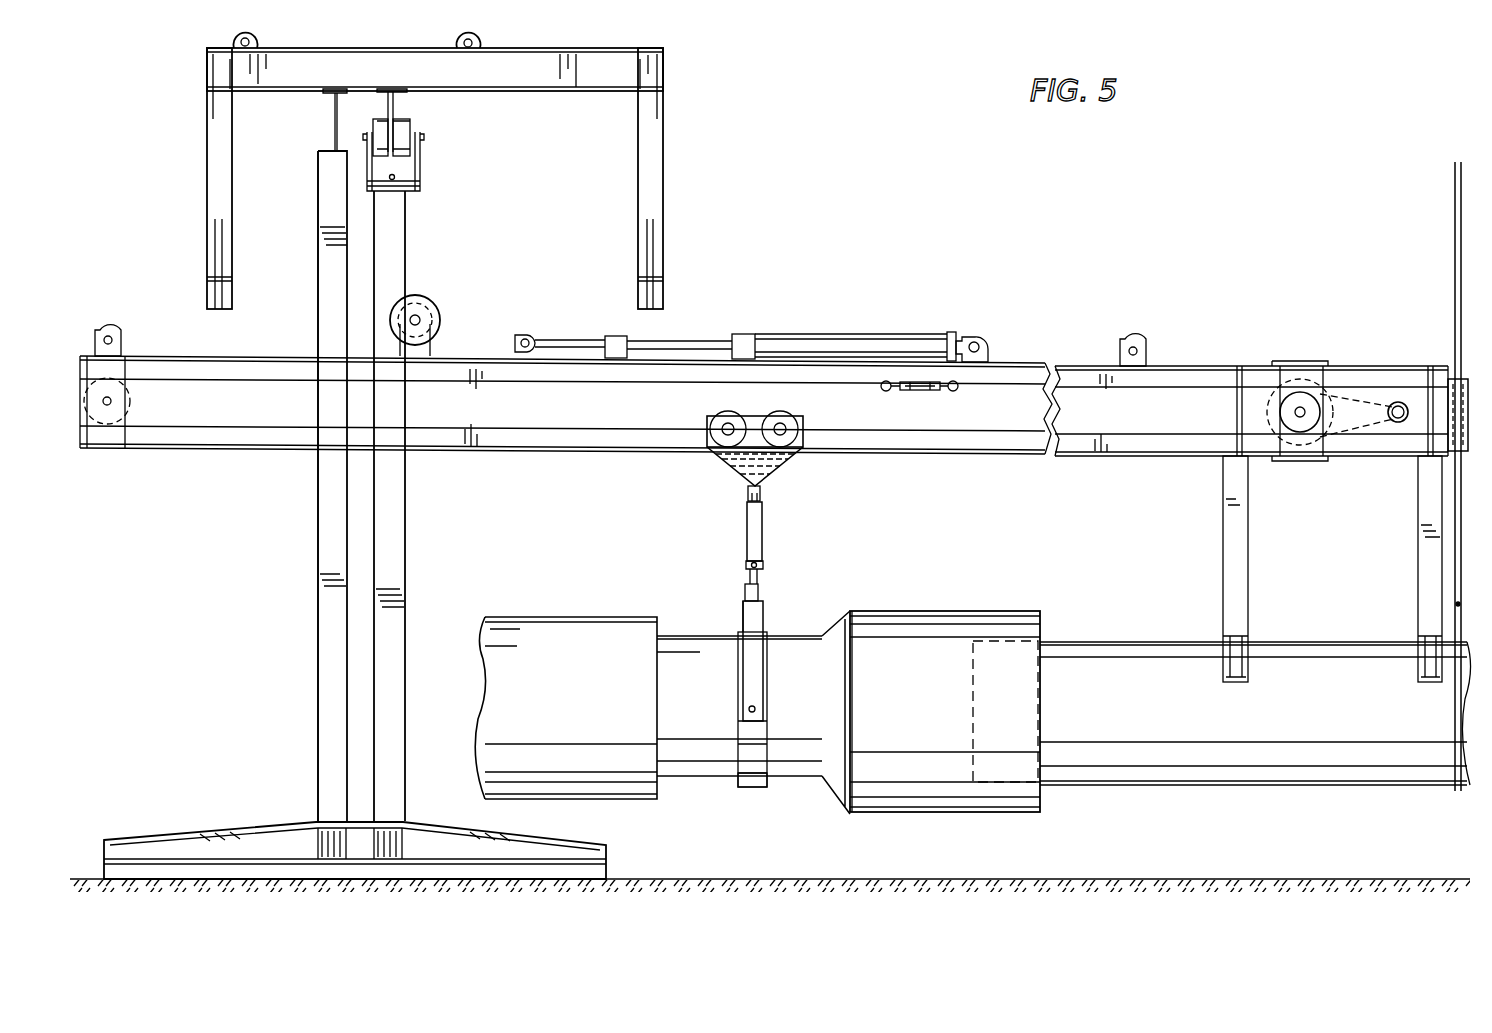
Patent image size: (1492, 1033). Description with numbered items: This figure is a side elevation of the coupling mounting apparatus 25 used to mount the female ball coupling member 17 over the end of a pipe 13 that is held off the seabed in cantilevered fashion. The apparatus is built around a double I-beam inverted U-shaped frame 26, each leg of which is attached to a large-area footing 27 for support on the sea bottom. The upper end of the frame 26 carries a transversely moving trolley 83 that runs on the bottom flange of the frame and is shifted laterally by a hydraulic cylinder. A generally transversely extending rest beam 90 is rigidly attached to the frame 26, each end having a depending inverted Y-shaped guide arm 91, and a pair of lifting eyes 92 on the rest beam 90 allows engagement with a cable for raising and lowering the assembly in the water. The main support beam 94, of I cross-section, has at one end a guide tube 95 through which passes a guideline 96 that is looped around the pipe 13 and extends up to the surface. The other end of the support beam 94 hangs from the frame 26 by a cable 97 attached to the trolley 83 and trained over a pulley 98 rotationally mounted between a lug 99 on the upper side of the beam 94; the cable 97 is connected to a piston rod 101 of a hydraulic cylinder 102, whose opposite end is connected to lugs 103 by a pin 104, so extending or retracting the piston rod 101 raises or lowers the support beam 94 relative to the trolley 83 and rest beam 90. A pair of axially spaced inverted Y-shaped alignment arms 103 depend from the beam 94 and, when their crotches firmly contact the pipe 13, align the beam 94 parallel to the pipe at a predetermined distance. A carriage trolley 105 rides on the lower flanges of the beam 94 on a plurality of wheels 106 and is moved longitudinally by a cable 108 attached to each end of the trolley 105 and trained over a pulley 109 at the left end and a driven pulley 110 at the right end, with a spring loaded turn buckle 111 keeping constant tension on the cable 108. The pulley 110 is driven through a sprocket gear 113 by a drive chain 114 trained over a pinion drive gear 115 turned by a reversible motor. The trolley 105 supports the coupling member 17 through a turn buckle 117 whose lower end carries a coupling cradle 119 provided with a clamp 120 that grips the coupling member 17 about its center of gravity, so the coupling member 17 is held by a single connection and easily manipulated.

The pipe 13 is at (1263, 767).
The female ball coupling member 17 is at (905, 797).
The coupling mounting apparatus 25 is at (306, 627).
The inverted U-shaped frame 26 is at (322, 540).
The footing 27 is at (584, 852).
The trolley 83 is at (420, 164).
The rest beam 90 is at (605, 82).
The guide arms 91 is at (210, 178).
The lifting eyes 92 is at (242, 52).
The main support beam 94 is at (1168, 377).
The guide tube 95 is at (1453, 457).
The guideline 96 is at (1460, 240).
The cable 97 is at (396, 240).
The pulley 98 is at (429, 298).
The lug 99 is at (418, 333).
The piston rod 101 is at (695, 340).
The hydraulic cylinder 102 is at (863, 340).
The lugs / alignment arms 103 is at (993, 352).
The pin 104 is at (973, 344).
The trolley 105 is at (777, 468).
The wheels 106 is at (722, 414).
The cable 108 is at (1015, 438).
The pulley 109 is at (132, 403).
The pulley 110 is at (1277, 417).
The spring loaded turn buckle 111 is at (921, 389).
The sprocket gear 113 is at (1330, 395).
The drive chain 114 is at (1368, 395).
The pinion drive gear 115 is at (1386, 425).
The turn buckle 117 is at (756, 540).
The coupling cradle 119 is at (754, 650).
The clamp 120 is at (753, 788).